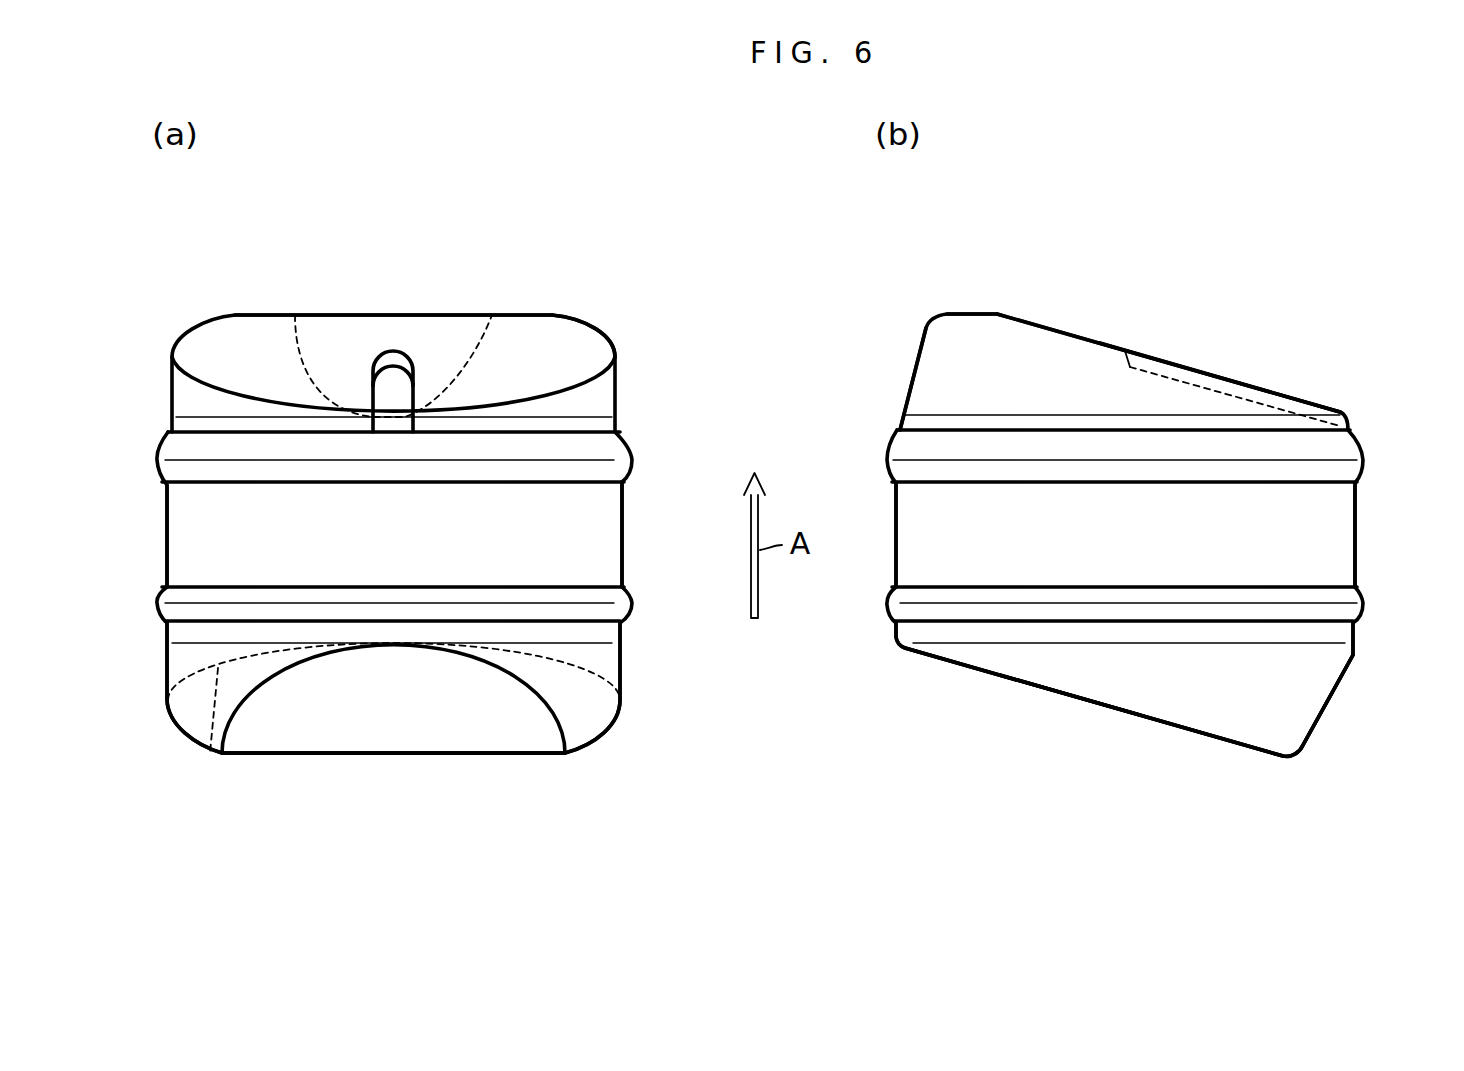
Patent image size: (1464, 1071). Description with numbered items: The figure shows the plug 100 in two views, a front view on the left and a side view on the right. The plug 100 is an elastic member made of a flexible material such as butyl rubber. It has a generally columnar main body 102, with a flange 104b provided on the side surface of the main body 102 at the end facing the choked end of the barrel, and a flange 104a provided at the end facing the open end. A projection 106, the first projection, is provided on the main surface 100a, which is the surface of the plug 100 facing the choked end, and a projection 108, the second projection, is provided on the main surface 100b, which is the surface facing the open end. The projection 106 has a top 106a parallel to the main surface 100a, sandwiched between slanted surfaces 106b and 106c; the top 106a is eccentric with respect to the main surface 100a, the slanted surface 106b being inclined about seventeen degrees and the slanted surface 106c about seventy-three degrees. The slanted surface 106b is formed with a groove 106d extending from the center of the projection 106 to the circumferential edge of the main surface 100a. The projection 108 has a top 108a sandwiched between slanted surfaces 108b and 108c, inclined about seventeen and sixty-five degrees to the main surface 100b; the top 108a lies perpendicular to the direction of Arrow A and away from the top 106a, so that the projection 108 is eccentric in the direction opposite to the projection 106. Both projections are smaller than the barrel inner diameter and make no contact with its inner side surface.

The plug 100 is at (176, 318).
The main surface 100a is at (215, 432).
The main surface 100b is at (220, 621).
The main body 102 is at (602, 540).
The flange 104a is at (613, 610).
The flange 104b is at (613, 447).
The projection 106 is at (602, 397).
The top 106a is at (262, 318).
The slanted surface 106b is at (518, 338).
The slanted surface 106c is at (297, 347).
The groove 106d is at (413, 390).
The projection 108 is at (585, 727).
The top 108a is at (533, 757).
The slanted surface 108b is at (210, 753).
The slanted surface 108c is at (412, 738).